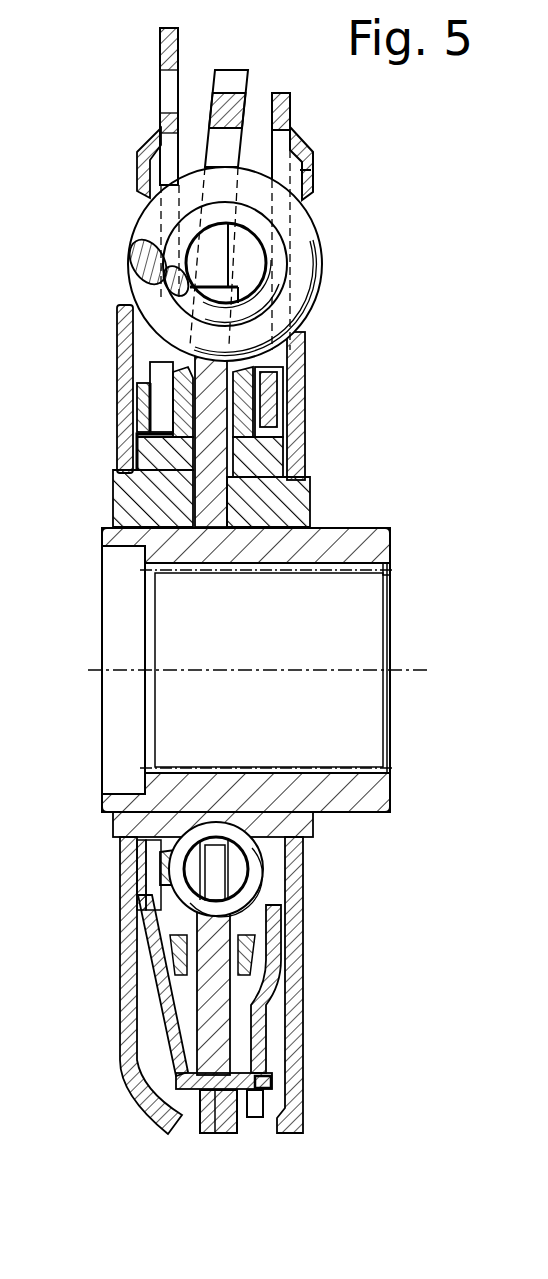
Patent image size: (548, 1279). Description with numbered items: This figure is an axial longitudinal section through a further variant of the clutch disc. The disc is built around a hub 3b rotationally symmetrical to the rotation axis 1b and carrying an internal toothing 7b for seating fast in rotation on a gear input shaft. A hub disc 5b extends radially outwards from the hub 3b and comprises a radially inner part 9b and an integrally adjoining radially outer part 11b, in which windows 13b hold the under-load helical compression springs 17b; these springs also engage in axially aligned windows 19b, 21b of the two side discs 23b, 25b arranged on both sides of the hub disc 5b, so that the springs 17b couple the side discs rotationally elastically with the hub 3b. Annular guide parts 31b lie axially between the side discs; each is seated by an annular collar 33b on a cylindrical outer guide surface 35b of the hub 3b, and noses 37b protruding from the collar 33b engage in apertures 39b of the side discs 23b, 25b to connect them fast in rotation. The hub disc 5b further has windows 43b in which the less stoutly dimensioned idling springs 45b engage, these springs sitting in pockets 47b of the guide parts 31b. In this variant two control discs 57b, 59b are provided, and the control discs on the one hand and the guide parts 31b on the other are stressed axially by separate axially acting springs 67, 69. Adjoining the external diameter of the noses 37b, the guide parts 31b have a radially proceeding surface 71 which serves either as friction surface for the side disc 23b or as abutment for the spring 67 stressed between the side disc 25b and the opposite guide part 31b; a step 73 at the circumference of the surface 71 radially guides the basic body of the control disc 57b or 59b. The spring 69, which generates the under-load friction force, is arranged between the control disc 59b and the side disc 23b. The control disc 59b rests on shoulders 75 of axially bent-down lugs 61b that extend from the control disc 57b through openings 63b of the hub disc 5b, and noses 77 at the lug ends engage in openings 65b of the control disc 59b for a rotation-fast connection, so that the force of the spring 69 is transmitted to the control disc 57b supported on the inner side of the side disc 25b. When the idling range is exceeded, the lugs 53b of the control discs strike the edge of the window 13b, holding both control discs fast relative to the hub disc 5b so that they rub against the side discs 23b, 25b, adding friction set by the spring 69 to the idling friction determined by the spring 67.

The rotation axis 1b is at (415, 672).
The hub 3b is at (384, 551).
The hub disc 5b is at (233, 143).
The internal toothing 7b is at (368, 584).
The radially inner part 9b is at (293, 493).
The radially outer part 11b is at (248, 1000).
The window 13b is at (243, 140).
The helical compression springs 17b is at (158, 226).
The window 19b is at (300, 172).
The window 21b is at (148, 166).
The side disc 23b is at (300, 348).
The side disc 25b is at (125, 316).
The guide parts 31b is at (163, 473).
The annular collar 33b is at (113, 825).
The cylindrical outer guide surface 35b is at (368, 532).
The noses 37b is at (127, 490).
The apertures 39b is at (137, 472).
The windows 43b is at (150, 972).
The helical springs 45b is at (145, 885).
The pockets 47b is at (153, 935).
The lugs 53b is at (229, 275).
The control disc 57b is at (137, 383).
The control disc 59b is at (281, 374).
The axially bent-down lugs 61b is at (233, 1092).
The openings 63b is at (212, 1135).
The openings 65b is at (260, 1094).
The axially acting spring 67 is at (138, 433).
The axially acting spring 69 is at (278, 396).
The radially proceeding surface 71 is at (117, 847).
The step 73 is at (135, 400).
The shoulders 75 is at (300, 1042).
The noses 77 is at (270, 1082).